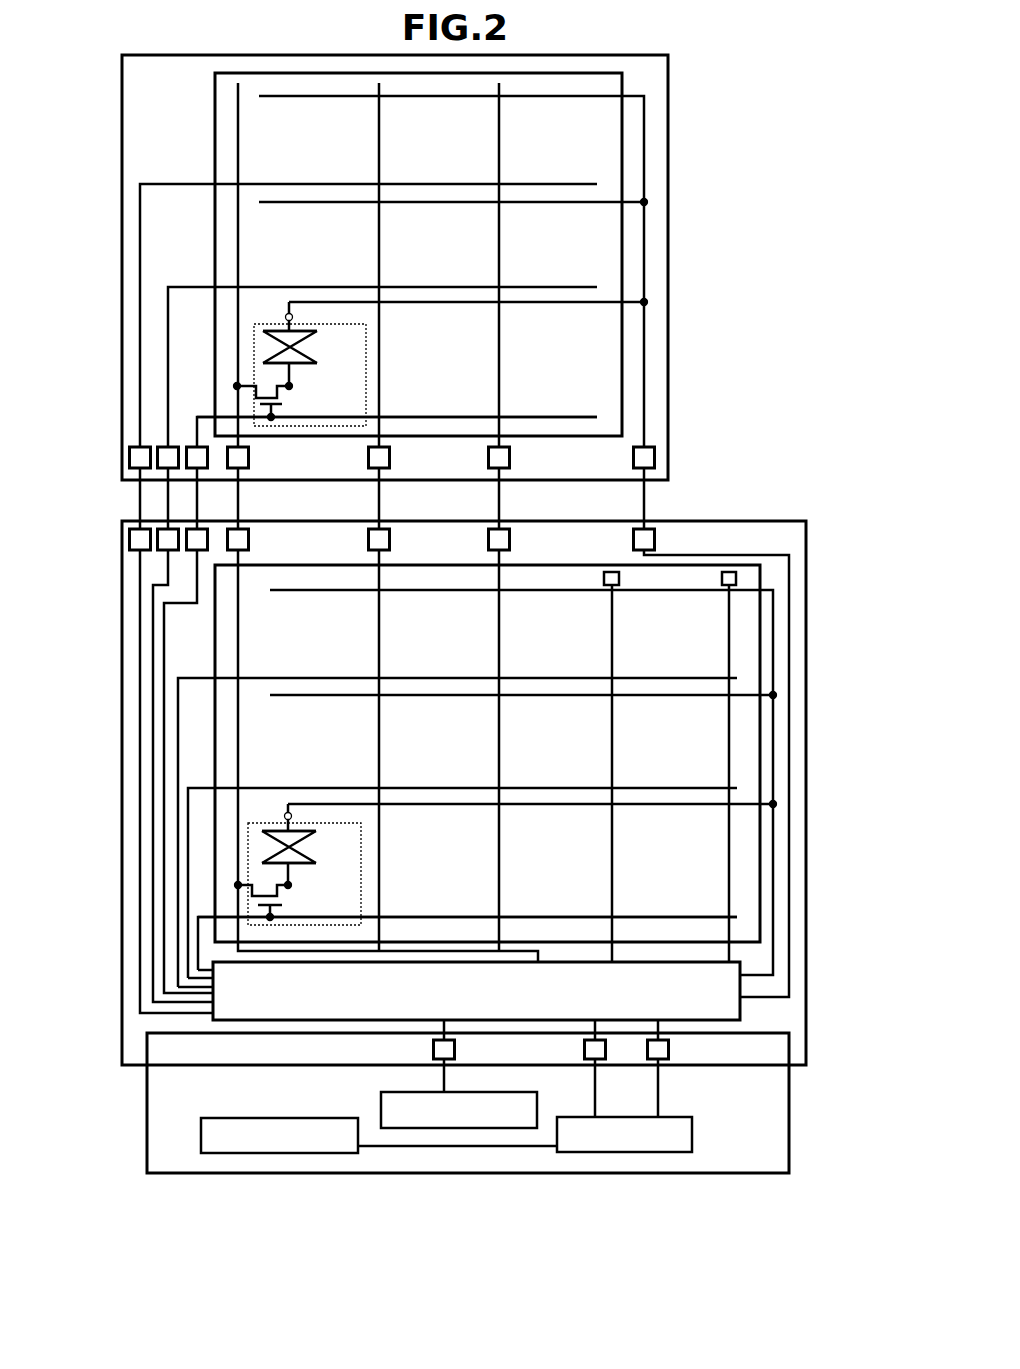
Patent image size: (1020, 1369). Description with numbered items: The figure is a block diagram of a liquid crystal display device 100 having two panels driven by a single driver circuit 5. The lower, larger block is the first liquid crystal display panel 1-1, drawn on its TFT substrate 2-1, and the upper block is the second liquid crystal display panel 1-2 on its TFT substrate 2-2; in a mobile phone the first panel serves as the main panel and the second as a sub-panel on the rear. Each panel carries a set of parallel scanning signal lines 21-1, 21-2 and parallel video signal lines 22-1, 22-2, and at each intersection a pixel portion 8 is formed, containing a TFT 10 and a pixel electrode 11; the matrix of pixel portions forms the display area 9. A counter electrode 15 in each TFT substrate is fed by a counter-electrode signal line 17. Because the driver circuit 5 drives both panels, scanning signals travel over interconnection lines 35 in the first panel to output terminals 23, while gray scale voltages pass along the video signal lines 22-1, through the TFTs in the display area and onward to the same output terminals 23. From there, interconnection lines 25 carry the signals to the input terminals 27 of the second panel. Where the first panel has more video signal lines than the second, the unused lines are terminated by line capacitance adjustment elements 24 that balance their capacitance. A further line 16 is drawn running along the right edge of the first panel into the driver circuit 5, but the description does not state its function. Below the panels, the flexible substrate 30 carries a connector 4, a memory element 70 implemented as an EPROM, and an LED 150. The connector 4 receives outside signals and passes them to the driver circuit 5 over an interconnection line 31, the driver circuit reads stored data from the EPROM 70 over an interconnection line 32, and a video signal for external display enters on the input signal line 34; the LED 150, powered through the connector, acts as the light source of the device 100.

The TFT substrate 2-2 is at (656, 203).
The second liquid crystal display panel 1-2 is at (670, 284).
The counter-electrode signal line 17 is at (640, 366).
The display area 9 is at (624, 143).
The video signal lines 22-2 is at (238, 218).
The scanning signal lines 21-2 is at (468, 416).
The counter electrode 15 is at (305, 324).
The pixel portion 8 is at (366, 329).
The pixel electrode 11 is at (315, 366).
The TFT 10 is at (284, 399).
The input terminal 27 is at (135, 455).
The interconnection line 25 is at (142, 500).
The TFT substrate 2-1 is at (712, 520).
The output terminal 23 is at (135, 540).
The first liquid crystal display panel 1-1 is at (808, 690).
The line capacitance adjustment element 24 is at (736, 578).
The wiring line 16 is at (773, 848).
The video signal lines 22-1 is at (238, 718).
The interconnection lines 35 is at (140, 732).
The scanning signal lines 21-1 is at (545, 914).
The driver circuit 5 is at (745, 1008).
The flexible substrate 30 is at (737, 1155).
The input signal line 34 is at (433, 1048).
The interconnection line 32 is at (444, 1080).
The interconnection line 31 is at (660, 1095).
The memory element 70 is at (381, 1102).
The LED 150 is at (270, 1155).
The connector 4 is at (614, 1153).
The liquid crystal display device 100 is at (428, 1176).